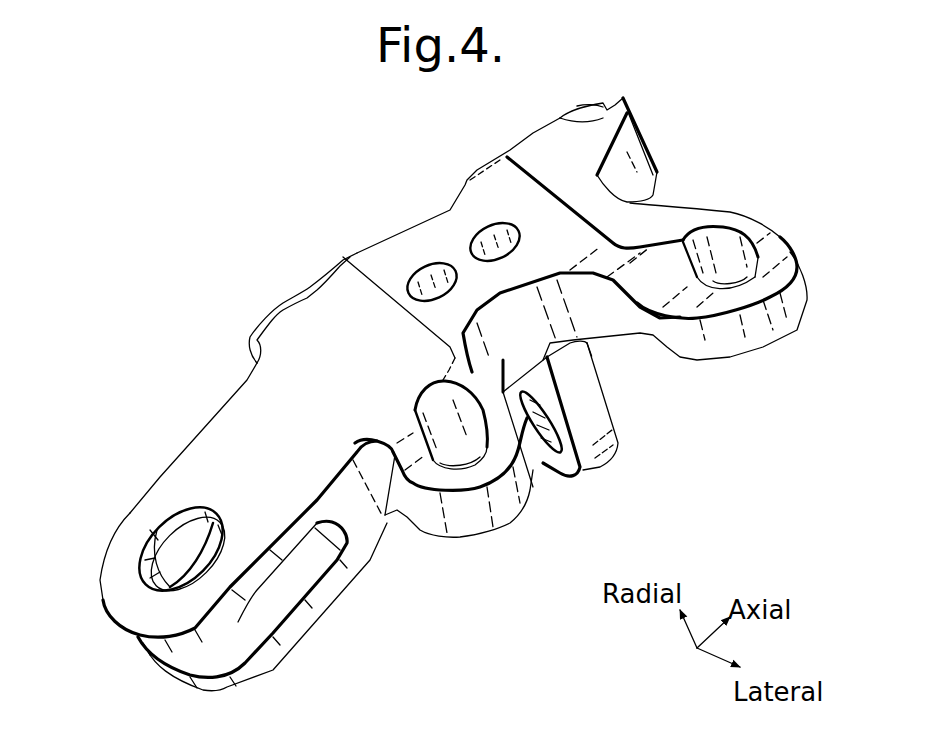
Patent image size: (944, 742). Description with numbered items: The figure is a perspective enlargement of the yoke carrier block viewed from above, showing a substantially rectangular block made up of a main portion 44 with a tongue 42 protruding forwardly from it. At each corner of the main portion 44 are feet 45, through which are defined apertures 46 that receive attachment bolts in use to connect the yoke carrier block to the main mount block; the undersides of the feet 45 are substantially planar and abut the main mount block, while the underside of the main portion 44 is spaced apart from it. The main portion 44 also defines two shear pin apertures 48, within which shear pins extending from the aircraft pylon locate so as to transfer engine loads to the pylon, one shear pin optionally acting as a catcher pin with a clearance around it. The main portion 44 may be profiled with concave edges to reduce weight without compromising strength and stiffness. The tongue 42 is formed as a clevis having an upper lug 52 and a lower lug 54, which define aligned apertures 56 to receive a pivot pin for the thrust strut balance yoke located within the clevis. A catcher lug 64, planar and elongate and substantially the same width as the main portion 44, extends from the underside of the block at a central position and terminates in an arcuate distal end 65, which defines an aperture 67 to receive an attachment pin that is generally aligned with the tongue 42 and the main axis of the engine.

The tongue 42 is at (300, 452).
The main portion 44 is at (500, 183).
The feet 45 is at (560, 112).
The apertures 46 is at (725, 262).
The shear pin aperture 48 is at (473, 237).
The upper lug 52 is at (177, 490).
The lower lug 54 is at (243, 637).
The apertures 56 is at (192, 562).
The catcher lug 64 is at (593, 403).
The distal end 65 is at (600, 447).
The aperture 67 is at (540, 443).